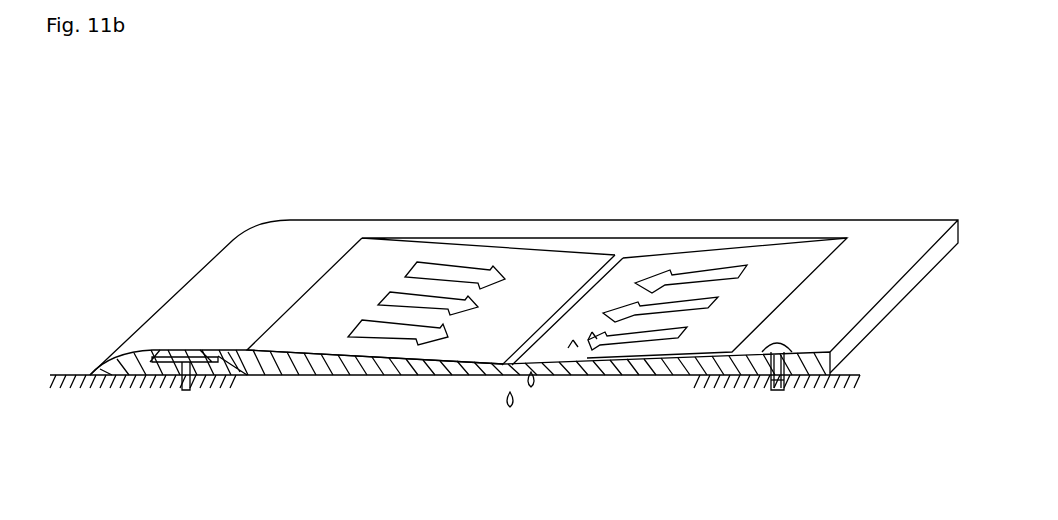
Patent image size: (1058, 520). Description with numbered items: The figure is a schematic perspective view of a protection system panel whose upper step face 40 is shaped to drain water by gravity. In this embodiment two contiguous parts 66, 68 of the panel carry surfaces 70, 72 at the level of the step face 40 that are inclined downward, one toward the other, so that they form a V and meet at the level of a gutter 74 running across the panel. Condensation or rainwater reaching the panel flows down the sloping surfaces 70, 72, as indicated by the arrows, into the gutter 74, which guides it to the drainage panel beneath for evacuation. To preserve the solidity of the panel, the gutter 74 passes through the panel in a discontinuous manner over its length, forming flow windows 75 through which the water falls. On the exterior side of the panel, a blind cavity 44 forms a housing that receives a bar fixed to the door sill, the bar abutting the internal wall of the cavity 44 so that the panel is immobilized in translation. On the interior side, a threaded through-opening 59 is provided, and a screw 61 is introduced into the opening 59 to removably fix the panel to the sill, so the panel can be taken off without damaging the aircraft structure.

The step face 40 is at (872, 262).
The cavity 44 is at (222, 385).
The threaded through-opening 59 is at (793, 380).
The screw 61 is at (770, 387).
The first contiguous part of the panel 66 is at (342, 367).
The second contiguous part of the panel 68 is at (648, 370).
The sloping surface 70 is at (380, 258).
The sloping surface 72 is at (780, 262).
The gutter 74 is at (613, 255).
The flow windows 75 is at (592, 335).